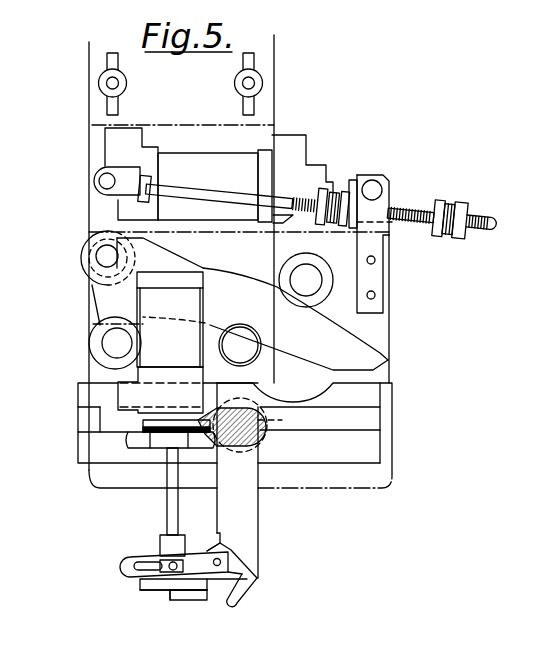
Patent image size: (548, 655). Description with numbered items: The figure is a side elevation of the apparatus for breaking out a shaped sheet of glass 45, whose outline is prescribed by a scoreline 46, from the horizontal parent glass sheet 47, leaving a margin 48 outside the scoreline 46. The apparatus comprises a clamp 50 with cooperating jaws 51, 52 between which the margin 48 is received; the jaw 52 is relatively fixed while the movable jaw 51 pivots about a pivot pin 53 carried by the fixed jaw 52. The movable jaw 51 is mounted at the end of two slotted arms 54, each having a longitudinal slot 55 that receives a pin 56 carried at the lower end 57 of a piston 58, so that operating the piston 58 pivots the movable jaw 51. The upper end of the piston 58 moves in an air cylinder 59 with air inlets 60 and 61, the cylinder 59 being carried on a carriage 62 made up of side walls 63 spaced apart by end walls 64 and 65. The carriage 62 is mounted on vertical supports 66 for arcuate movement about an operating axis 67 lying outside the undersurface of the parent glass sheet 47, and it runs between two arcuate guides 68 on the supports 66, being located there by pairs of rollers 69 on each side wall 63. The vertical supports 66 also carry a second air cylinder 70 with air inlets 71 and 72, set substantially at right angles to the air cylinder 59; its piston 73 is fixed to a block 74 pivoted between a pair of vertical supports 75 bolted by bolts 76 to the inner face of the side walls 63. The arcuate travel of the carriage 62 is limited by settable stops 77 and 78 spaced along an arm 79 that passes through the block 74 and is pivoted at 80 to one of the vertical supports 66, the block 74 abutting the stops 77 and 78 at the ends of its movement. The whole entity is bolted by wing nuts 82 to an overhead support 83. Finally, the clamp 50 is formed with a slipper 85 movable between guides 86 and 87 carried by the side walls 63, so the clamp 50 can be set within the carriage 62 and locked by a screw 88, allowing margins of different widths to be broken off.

The shaped sheet of glass 45 is at (142, 605).
The scoreline 46 is at (174, 581).
The parent glass sheet 47 is at (148, 585).
The margin 48 is at (189, 588).
The clamp 50 is at (270, 525).
The movable jaw 51 is at (238, 594).
The fixed jaw 52 is at (247, 547).
The pivot pin 53 is at (220, 562).
The slotted arms 54 is at (130, 562).
The longitudinal slot 55 is at (140, 567).
The pin 56 is at (170, 563).
The lower end of piston 57 is at (170, 540).
The piston 58 is at (170, 498).
The air cylinder 59 is at (148, 304).
The air inlet 60 is at (128, 255).
The air inlet 61 is at (127, 400).
The carriage 62 is at (397, 313).
The side walls 63 is at (380, 335).
The end wall 64 is at (383, 448).
The end wall 65 is at (93, 445).
The vertical supports 66 is at (98, 210).
The operating axis 67 is at (172, 598).
The arcuate guides 68 is at (360, 357).
The rollers 69 is at (107, 260).
The second air cylinder 70 is at (222, 162).
The air inlet 71 is at (113, 137).
The air inlet 72 is at (297, 157).
The piston 73 is at (332, 187).
The block 74 is at (392, 177).
The vertical supports 75 is at (371, 210).
The bolts 76 is at (378, 295).
The settable stop 77 is at (443, 205).
The settable stop 78 is at (352, 228).
The arm 79 is at (484, 229).
The pivot 80 is at (107, 180).
The wing nuts 82 is at (98, 83).
The overhead support 83 is at (183, 107).
The slipper 85 is at (257, 437).
The guide 86 is at (363, 398).
The guide 87 is at (337, 455).
The screw 88 is at (270, 420).